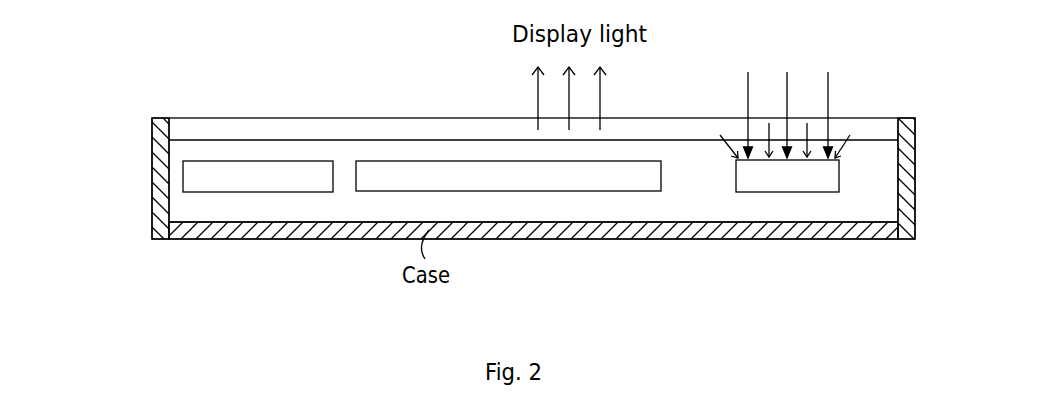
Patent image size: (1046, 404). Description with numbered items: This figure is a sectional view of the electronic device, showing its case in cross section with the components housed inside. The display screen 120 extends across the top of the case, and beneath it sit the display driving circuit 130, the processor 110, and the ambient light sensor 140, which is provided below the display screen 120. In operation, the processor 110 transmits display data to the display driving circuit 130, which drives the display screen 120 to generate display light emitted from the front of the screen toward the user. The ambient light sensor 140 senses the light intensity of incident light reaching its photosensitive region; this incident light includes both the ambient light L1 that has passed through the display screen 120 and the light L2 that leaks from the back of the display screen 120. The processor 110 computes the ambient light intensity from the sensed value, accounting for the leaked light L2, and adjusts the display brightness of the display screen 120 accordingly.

The processor 110 is at (548, 175).
The display screen 120 is at (313, 127).
The display driving circuit 130 is at (214, 176).
The ambient light sensor 140 is at (815, 175).
The ambient light L1 is at (784, 98).
The light leaked from the back of the display screen L2 is at (785, 127).